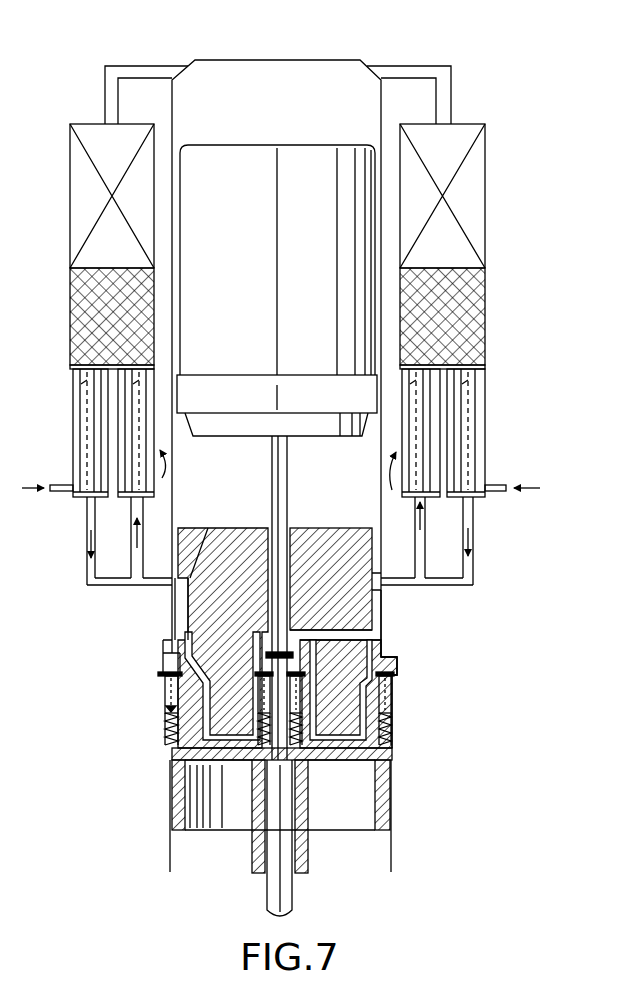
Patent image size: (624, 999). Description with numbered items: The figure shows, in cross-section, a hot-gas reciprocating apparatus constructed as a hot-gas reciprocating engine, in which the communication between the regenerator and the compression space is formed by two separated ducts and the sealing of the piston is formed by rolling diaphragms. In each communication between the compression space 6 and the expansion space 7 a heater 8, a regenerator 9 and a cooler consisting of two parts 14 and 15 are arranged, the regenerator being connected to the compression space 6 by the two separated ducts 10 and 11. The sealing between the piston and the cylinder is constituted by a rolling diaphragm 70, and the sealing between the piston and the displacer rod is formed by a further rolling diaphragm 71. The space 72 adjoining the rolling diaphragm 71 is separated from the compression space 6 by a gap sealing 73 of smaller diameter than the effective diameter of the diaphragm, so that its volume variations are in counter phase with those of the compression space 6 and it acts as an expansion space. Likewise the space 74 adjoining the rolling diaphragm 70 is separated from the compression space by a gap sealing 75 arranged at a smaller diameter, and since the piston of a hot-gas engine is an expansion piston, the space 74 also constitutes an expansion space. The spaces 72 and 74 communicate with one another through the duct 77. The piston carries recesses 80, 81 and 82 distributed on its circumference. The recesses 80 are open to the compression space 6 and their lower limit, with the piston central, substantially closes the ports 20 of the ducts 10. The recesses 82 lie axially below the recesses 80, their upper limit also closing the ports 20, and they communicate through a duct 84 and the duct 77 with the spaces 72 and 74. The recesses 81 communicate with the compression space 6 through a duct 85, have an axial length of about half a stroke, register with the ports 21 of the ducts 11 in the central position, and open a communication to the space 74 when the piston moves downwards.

The compression space 6 is at (247, 468).
The expansion space 7 is at (320, 80).
The heater 8 is at (78, 196).
The regenerator 9 is at (96, 320).
The duct 10 is at (90, 513).
The duct 11 is at (134, 510).
The cooler part 14 is at (82, 386).
The cooler part 15 is at (132, 420).
The ports 20 is at (385, 578).
The ports 21 is at (168, 586).
The rolling diaphragm 70 is at (163, 700).
The rolling diaphragm 71 is at (306, 690).
The space 72 is at (292, 642).
The gap sealing 73 is at (296, 530).
The space 74 is at (398, 661).
The gap sealing 75 is at (163, 653).
The duct 77 is at (165, 732).
The recesses 80 is at (377, 541).
The recesses 81 is at (180, 608).
The recesses 82 is at (377, 605).
The duct 84 is at (356, 636).
The duct 85 is at (208, 528).